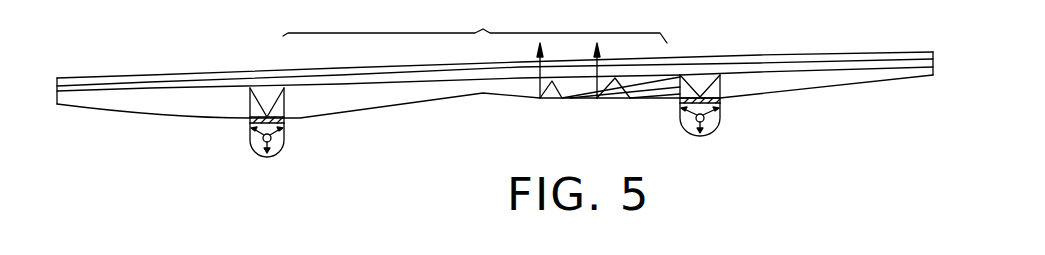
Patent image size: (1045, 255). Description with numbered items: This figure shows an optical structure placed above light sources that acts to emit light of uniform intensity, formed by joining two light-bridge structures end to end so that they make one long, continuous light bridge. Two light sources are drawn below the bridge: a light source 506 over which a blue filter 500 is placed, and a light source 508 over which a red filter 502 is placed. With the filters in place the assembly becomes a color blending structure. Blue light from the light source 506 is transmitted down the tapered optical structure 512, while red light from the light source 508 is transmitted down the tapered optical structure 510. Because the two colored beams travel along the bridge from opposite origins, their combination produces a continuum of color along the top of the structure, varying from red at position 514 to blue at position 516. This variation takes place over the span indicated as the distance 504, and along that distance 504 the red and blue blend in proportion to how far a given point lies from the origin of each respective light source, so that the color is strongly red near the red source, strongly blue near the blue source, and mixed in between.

The blue filter 500 is at (253, 125).
The red filter 502 is at (721, 101).
The distance 504 is at (475, 53).
The light source 506 is at (273, 145).
The light source 508 is at (708, 137).
The tapered optical structure 510 is at (587, 99).
The tapered optical structure 512 is at (377, 112).
The position 514 is at (685, 52).
The position 516 is at (270, 70).